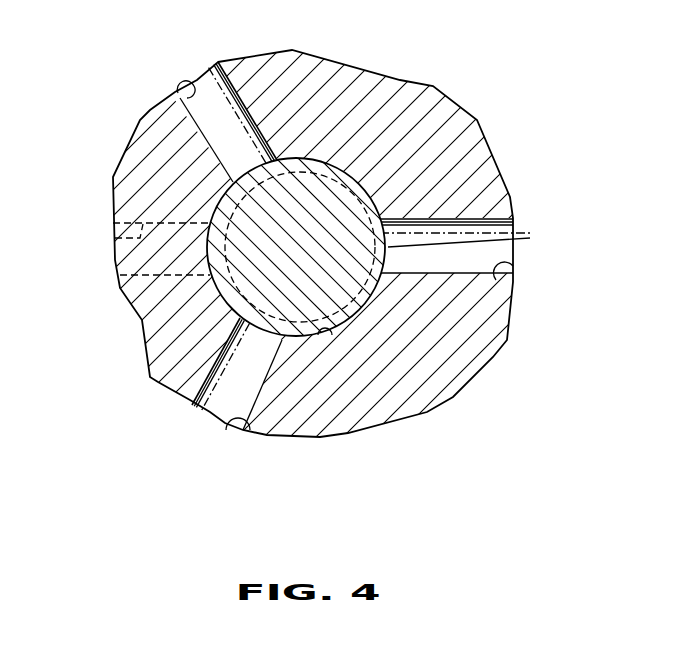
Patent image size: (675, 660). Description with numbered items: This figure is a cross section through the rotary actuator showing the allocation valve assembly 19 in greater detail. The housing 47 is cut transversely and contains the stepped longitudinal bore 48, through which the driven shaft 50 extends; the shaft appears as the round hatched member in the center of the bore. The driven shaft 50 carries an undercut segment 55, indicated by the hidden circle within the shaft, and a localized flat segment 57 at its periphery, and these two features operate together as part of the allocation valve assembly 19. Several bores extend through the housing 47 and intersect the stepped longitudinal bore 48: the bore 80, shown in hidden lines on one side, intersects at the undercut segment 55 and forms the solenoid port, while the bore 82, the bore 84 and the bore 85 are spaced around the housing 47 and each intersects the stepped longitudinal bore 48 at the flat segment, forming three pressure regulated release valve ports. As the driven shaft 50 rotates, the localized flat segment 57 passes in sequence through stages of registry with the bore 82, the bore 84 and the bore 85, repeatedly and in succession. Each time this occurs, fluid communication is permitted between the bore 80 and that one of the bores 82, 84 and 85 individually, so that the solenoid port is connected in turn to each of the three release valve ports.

The allocation valve assembly 19 is at (522, 150).
The housing 47 is at (448, 106).
The stepped longitudinal bore 48 is at (320, 338).
The driven shaft 50 is at (372, 307).
The undercut segment 55 is at (329, 180).
The localized flat segment 57 is at (513, 233).
The bore 80 is at (113, 240).
The bore 82 is at (513, 264).
The bore 84 is at (192, 86).
The bore 85 is at (228, 418).